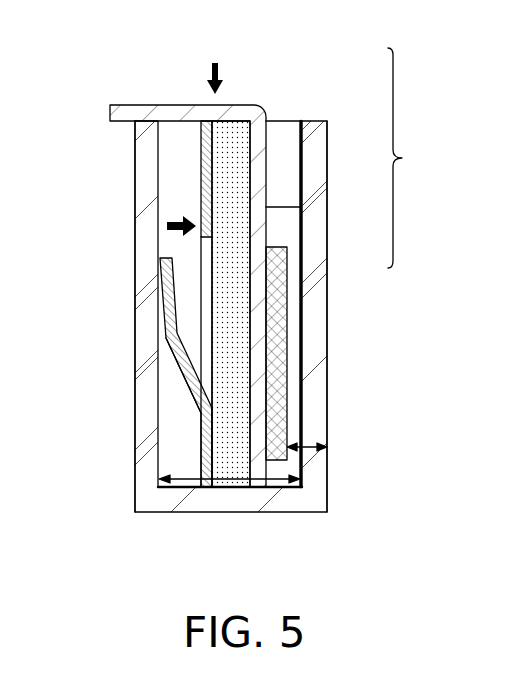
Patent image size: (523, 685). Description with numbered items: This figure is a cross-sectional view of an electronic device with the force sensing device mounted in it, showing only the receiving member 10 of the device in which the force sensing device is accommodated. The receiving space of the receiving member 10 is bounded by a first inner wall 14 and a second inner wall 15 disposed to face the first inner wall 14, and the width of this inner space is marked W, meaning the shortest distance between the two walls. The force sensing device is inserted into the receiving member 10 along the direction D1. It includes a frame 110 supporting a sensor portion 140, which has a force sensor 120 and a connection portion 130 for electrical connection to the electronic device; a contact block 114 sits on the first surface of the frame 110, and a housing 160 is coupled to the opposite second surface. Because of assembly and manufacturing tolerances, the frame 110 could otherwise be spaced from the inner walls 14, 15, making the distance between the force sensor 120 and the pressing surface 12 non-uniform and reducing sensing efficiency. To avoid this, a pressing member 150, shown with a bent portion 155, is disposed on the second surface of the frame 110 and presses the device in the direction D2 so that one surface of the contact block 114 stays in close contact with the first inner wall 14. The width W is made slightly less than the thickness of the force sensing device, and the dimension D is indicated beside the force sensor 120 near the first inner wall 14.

The receiving member 10 is at (327, 344).
The pressing surface 12 is at (327, 388).
The first inner wall 14 is at (313, 413).
The second inner wall 15 is at (142, 400).
The frame 110 is at (233, 478).
The contact block 114 is at (293, 303).
The force sensor 120 is at (287, 275).
The connection portion 130 is at (223, 111).
The sensor portion 140 is at (419, 158).
The pressing member 150 is at (184, 378).
The bent portion 155 is at (170, 340).
The housing 160 is at (208, 180).
The gap distance D is at (306, 449).
The insertion direction D1 is at (213, 63).
The pressing direction D2 is at (170, 240).
The width of the inner space W is at (287, 481).